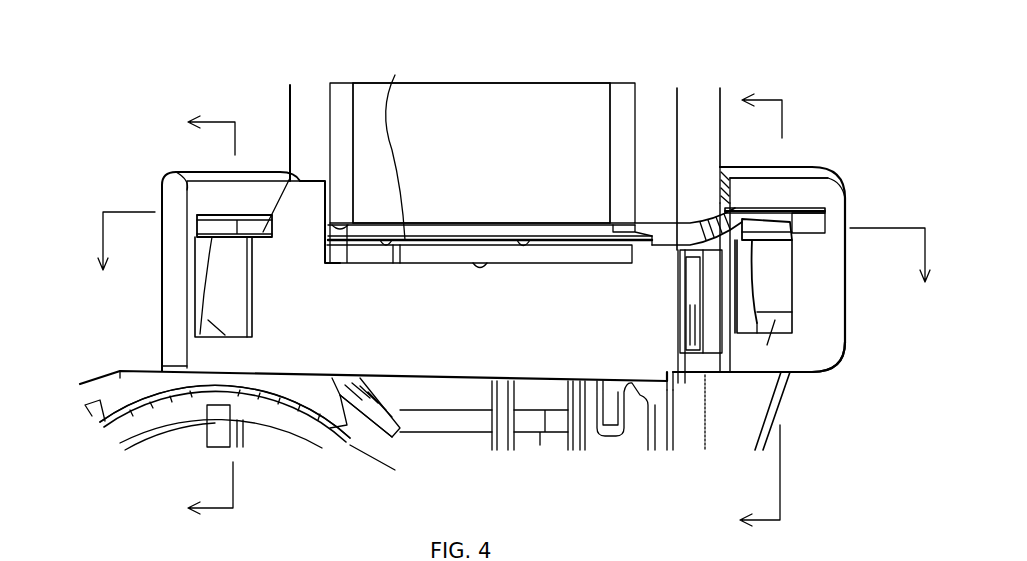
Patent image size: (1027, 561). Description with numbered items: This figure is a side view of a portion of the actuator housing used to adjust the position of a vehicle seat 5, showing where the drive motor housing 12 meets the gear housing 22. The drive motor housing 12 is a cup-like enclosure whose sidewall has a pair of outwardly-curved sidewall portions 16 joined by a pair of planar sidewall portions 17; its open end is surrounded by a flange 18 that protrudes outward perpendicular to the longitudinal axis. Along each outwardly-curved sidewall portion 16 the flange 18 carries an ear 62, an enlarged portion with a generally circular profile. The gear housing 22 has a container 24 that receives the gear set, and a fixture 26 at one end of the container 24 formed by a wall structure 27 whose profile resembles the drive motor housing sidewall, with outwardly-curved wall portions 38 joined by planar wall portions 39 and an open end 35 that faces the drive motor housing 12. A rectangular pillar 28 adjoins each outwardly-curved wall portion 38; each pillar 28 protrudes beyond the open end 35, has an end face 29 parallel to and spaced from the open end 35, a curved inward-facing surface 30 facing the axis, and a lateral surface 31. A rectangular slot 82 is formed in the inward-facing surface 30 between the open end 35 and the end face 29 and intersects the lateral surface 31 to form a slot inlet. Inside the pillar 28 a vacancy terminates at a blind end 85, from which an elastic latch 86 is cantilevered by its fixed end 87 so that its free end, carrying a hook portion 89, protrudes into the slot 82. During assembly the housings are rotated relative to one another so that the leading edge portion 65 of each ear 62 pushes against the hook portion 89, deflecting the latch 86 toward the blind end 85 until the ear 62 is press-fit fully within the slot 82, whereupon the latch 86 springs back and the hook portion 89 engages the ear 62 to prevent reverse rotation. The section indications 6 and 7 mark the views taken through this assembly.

The vehicle seat 5 is at (510, 263).
The section line 6- 6 is at (746, 300).
The section line 7- 7 is at (192, 320).
The drive motor housing 12 is at (478, 110).
The outwardly-curved sidewall portion 16 is at (300, 105).
The planar sidewall portion 17 is at (492, 176).
The flange 18 is at (732, 210).
The gear housing 22 is at (113, 432).
The container 24 is at (225, 411).
The fixture 26 is at (422, 347).
The wall structure 27 is at (366, 416).
The pillar 28 is at (178, 280).
The end face 29 is at (200, 172).
The inward-facing surface 30 is at (717, 188).
The lateral surface 31 is at (818, 355).
The open end 35 is at (391, 145).
The outwardly-curved wall portion 38 is at (720, 372).
The planar wall portion 39 is at (520, 338).
The ear 62 is at (205, 222).
The leading edge portion 65 is at (288, 172).
The slot 82 is at (262, 237).
The blind end 85 is at (740, 332).
The latch 86 is at (235, 290).
The fixed end 87 is at (205, 320).
The hook portion 89 is at (795, 208).